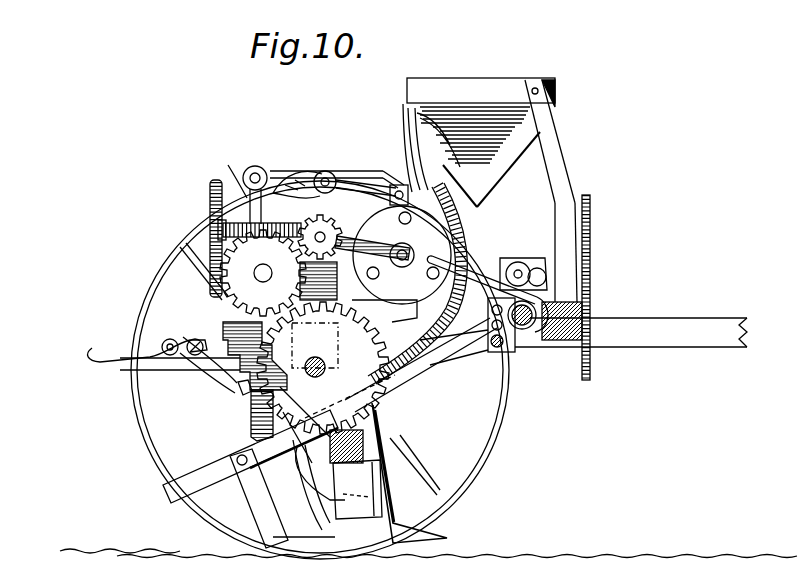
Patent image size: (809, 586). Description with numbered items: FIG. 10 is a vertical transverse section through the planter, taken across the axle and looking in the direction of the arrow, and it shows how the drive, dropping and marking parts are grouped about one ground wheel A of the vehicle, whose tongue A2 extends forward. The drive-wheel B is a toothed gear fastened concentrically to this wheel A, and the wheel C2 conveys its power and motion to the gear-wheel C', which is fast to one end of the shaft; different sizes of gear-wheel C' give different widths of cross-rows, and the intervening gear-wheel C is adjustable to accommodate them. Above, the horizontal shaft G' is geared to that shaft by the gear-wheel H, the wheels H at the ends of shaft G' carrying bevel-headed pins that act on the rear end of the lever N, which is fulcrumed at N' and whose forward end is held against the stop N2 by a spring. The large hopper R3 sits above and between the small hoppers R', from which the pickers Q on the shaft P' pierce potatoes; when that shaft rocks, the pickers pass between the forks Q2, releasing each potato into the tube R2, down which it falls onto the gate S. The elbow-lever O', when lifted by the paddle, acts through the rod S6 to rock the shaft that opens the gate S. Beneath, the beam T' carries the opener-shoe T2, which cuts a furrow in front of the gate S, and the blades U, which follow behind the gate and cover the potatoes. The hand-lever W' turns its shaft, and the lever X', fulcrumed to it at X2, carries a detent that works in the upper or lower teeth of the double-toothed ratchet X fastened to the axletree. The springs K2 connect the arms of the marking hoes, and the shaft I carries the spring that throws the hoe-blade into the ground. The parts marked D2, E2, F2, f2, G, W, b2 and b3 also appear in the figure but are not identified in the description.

The wheel A is at (486, 447).
The tongue A2 is at (689, 312).
The drive-wheel B is at (326, 382).
The intervening gear-wheel C is at (318, 281).
The gear-wheel C' is at (320, 237).
The wheel C2 is at (263, 273).
The pawl D2 is at (349, 220).
The link ring E2 is at (325, 172).
The slide bar F2 is at (212, 186).
The rack f2 is at (216, 222).
The arm G is at (372, 246).
The horizontal shaft G' is at (401, 264).
The gear-wheel H is at (398, 288).
The shaft I is at (531, 340).
The spring K2 is at (566, 345).
The lever N is at (523, 289).
The fulcrum N' is at (523, 257).
The stop N2 is at (540, 268).
The elbow-lever O' is at (269, 184).
The shaft P' is at (339, 173).
The picker Q is at (409, 139).
The fork Q2 is at (410, 108).
The small hopper R' is at (491, 170).
The tube R2 is at (421, 382).
The large hopper R3 is at (492, 190).
The gate S is at (339, 483).
The rod S6 is at (228, 170).
The beam T' is at (231, 456).
The opener-shoe T2 is at (440, 528).
The blade U is at (282, 494).
The lever W is at (170, 375).
The hand-lever W' is at (178, 370).
The double-toothed ratchet X is at (241, 351).
The lever X' is at (169, 317).
The fulcrum X2 is at (222, 337).
The rack bar b2 is at (240, 388).
The rack b3 is at (590, 378).